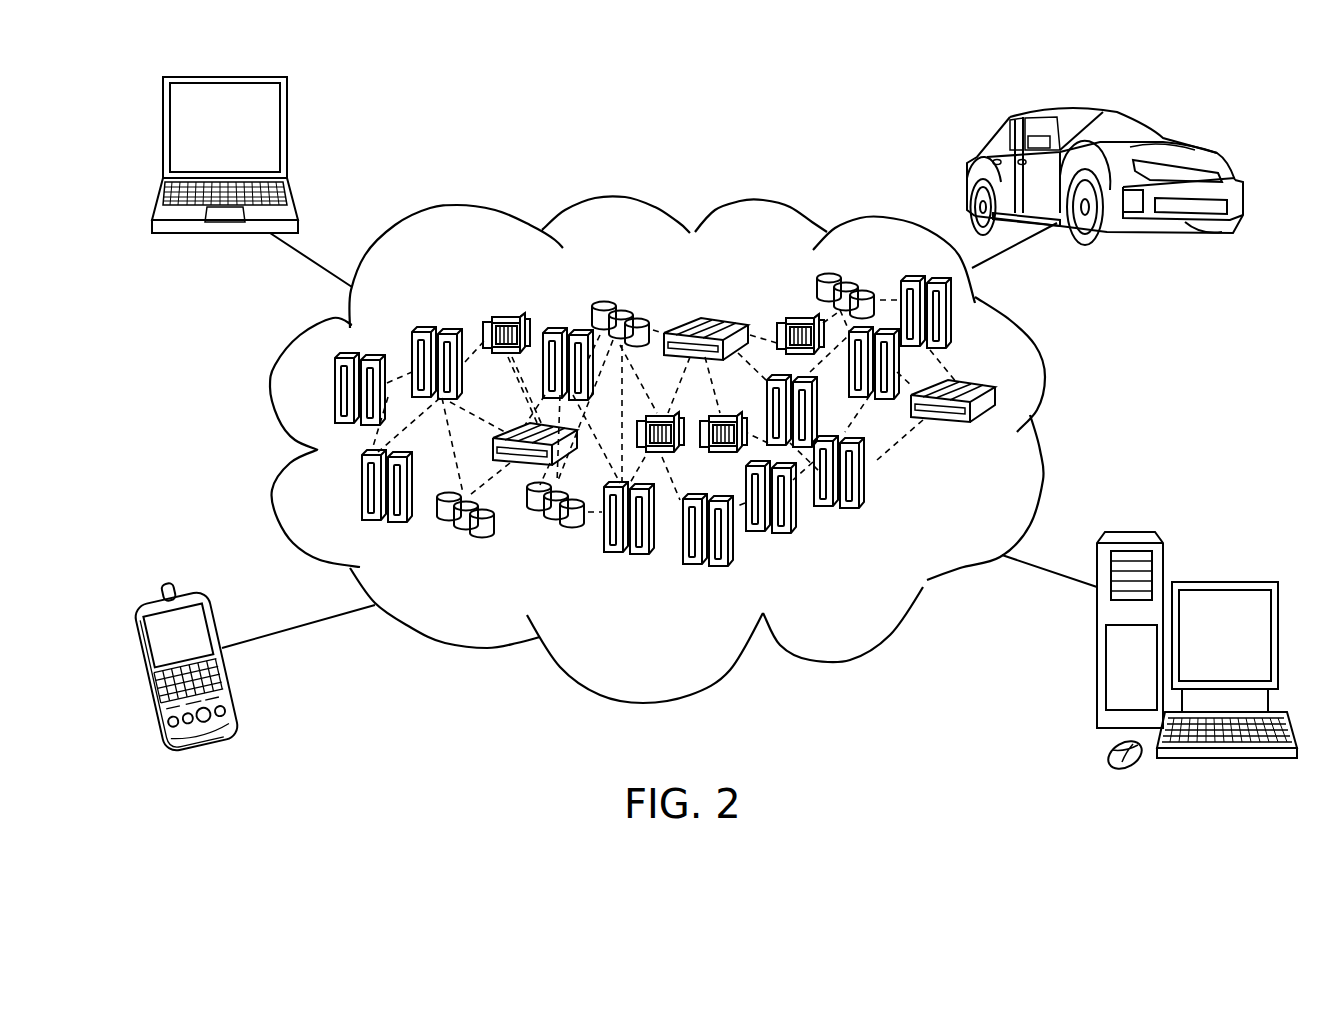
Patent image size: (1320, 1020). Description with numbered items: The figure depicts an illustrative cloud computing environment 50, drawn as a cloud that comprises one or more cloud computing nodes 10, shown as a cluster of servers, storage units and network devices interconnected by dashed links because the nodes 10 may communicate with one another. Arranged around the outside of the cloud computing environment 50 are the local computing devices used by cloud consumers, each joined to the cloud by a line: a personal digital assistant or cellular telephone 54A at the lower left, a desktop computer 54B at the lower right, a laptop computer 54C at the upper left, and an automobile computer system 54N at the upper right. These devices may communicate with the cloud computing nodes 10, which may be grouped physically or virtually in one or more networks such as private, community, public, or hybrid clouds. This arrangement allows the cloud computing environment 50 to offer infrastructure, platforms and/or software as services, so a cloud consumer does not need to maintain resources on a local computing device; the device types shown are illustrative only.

The cloud computing node 10 is at (1026, 489).
The cloud computing environment 50 is at (1045, 468).
The personal digital assistant (PDA) or cellular telephone 54A is at (236, 678).
The desktop computer 54B is at (1222, 580).
The laptop computer 54C is at (287, 122).
The automobile computer system 54N is at (970, 163).